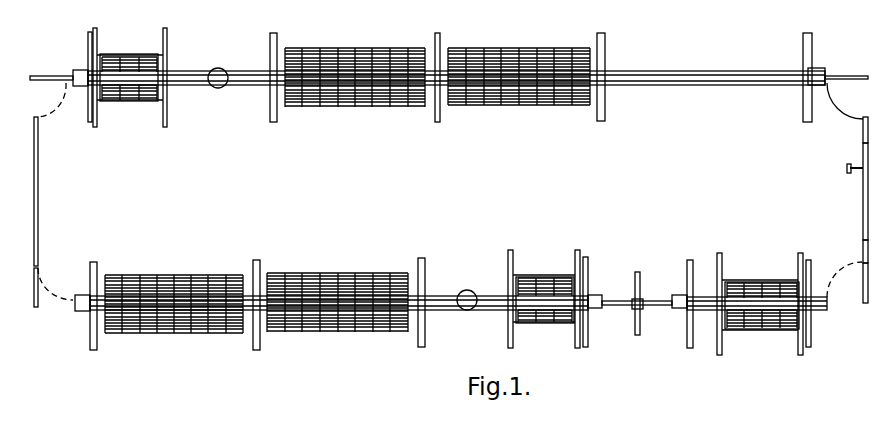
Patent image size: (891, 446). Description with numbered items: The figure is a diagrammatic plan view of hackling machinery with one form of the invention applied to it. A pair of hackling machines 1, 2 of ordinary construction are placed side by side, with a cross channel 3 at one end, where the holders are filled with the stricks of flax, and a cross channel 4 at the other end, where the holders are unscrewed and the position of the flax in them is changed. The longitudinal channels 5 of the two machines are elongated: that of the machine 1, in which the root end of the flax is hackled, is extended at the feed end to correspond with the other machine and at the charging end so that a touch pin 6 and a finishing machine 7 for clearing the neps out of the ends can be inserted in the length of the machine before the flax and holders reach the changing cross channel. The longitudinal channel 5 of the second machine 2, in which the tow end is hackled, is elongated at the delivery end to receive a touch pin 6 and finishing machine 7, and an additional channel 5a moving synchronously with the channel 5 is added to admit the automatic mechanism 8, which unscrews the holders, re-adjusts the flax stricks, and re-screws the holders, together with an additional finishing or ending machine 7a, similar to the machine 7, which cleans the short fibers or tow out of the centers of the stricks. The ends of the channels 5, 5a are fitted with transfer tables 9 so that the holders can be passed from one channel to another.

The hackling machine 1 is at (398, 95).
The hackling machine 2 is at (300, 280).
The cross channel 3 is at (862, 190).
The cross channel 4 is at (38, 205).
The longitudinal channel 5 is at (355, 80).
The additional channel 5a is at (697, 297).
The touch pin 6 is at (221, 68).
The finishing machine 7 is at (131, 95).
The additional finishing or ending machine 7a is at (752, 283).
The automatic mechanism 8 is at (641, 288).
The transfer table 9 is at (80, 87).